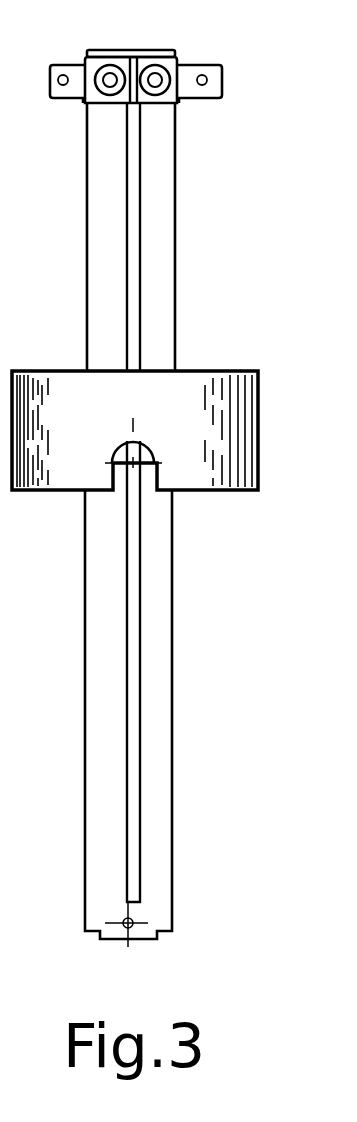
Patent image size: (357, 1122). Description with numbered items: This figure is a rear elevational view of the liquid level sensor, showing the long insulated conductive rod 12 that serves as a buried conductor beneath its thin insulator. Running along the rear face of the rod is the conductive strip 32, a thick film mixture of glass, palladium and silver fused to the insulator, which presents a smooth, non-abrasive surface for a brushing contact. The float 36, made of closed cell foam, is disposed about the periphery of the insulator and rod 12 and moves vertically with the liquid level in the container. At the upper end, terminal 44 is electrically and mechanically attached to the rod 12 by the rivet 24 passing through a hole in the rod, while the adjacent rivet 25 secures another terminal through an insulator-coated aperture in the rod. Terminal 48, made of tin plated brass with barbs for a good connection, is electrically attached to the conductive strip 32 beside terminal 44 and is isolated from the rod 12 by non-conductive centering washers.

The insulated conductive rod 12 is at (90, 226).
The rivet 24 is at (176, 68).
The rivet 25 is at (95, 72).
The conductive strip 32 is at (142, 248).
The float 36 is at (258, 410).
The terminal 44 is at (53, 66).
The terminal 48 is at (223, 70).